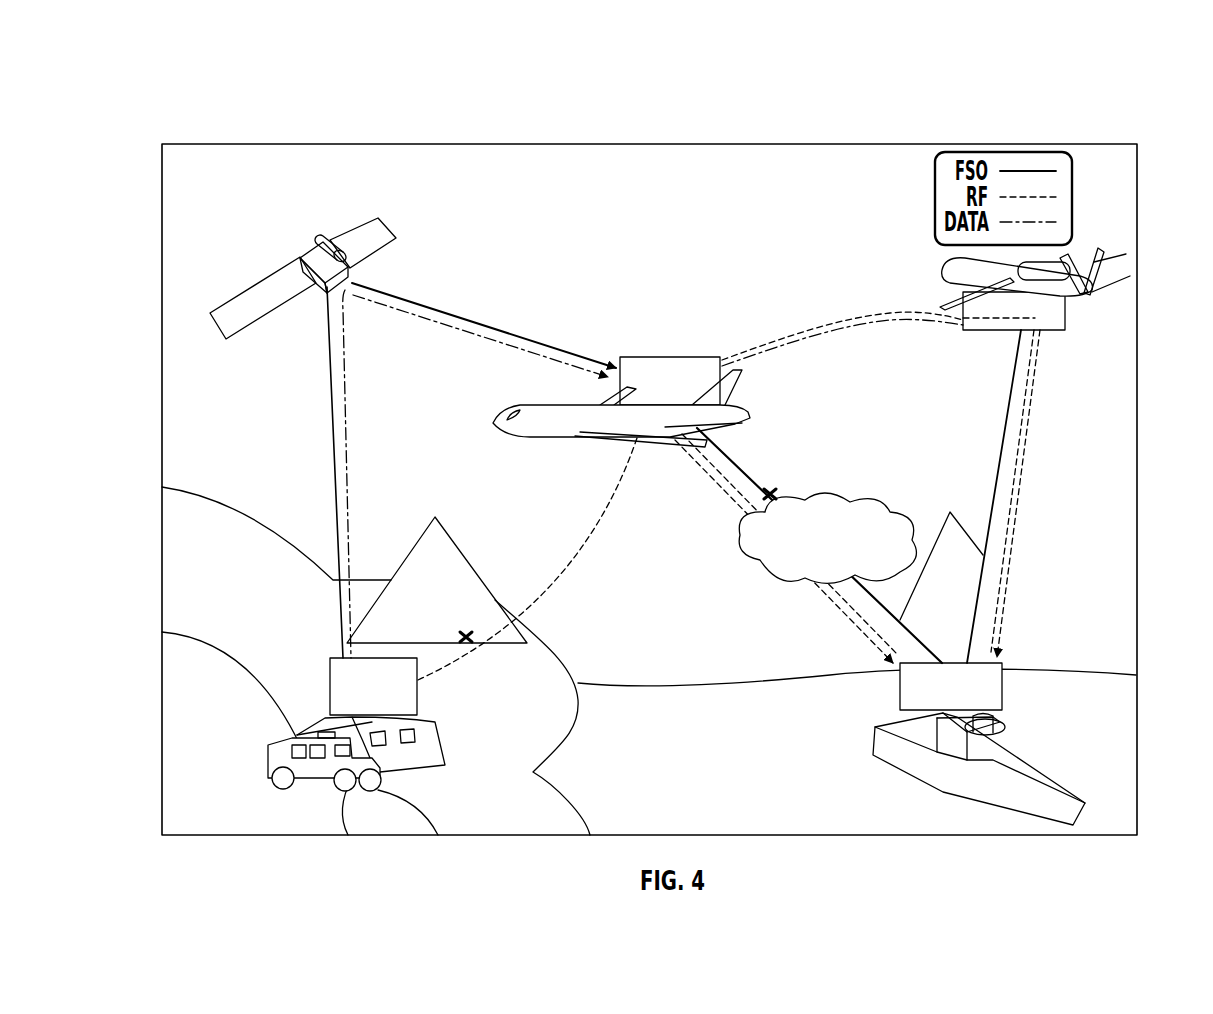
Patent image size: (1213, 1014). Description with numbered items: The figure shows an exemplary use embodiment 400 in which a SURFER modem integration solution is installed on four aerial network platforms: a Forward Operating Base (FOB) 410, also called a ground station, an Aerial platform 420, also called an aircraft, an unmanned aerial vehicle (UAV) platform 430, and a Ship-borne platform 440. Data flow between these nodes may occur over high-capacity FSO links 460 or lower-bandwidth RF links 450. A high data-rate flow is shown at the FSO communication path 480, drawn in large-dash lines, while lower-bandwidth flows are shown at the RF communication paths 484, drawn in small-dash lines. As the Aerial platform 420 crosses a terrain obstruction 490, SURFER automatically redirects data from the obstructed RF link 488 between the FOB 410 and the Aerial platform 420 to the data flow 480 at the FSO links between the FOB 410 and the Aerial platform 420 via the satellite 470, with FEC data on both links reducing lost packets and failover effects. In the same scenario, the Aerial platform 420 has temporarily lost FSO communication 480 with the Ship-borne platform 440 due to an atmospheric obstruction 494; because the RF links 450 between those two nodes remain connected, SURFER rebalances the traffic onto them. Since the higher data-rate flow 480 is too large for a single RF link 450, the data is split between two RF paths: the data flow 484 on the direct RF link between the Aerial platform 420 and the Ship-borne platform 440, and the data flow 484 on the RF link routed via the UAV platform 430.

The exemplary use embodiment 400 is at (937, 63).
The Forward Operating Base (FOB) 410 is at (352, 785).
The Aerial platform 420 is at (598, 417).
The unmanned aerial vehicle (UAV) platform 430 is at (1102, 270).
The Ship-borne platform 440 is at (972, 752).
The RF links 450 is at (1027, 483).
The FSO links 460 is at (941, 548).
The satellite 470 is at (323, 238).
The FSO communication path 480 is at (427, 307).
The RF communication paths 484 is at (760, 350).
The obstructed RF link 488 is at (459, 645).
The terrain obstruction 490 is at (423, 640).
The atmospheric obstruction 494 is at (818, 580).